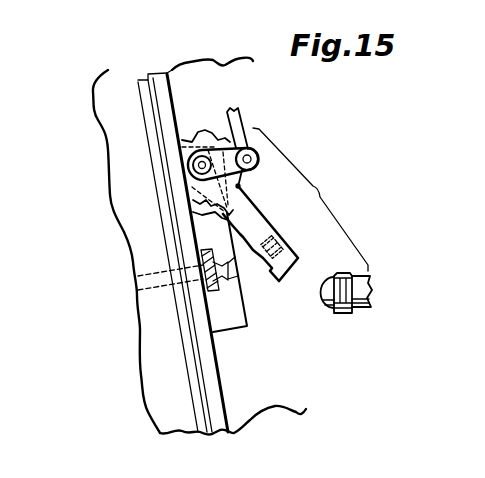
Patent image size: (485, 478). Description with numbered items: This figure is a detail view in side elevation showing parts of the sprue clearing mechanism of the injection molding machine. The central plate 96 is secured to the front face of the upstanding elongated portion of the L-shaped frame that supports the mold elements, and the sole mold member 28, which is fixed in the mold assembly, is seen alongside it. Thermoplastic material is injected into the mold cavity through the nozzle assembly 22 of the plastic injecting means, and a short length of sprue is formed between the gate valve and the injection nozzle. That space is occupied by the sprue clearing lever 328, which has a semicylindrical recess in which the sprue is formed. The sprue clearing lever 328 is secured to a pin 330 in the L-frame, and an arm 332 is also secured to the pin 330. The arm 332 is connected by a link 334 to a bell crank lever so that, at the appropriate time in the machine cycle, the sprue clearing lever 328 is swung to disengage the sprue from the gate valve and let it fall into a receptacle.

The nozzle assembly 22 is at (353, 307).
The sole mold member 28 is at (151, 331).
The central plate 96 is at (138, 79).
The sprue clearing lever 328 is at (250, 222).
The pin 330 is at (202, 163).
The arm 332 is at (229, 156).
The link 334 is at (226, 114).